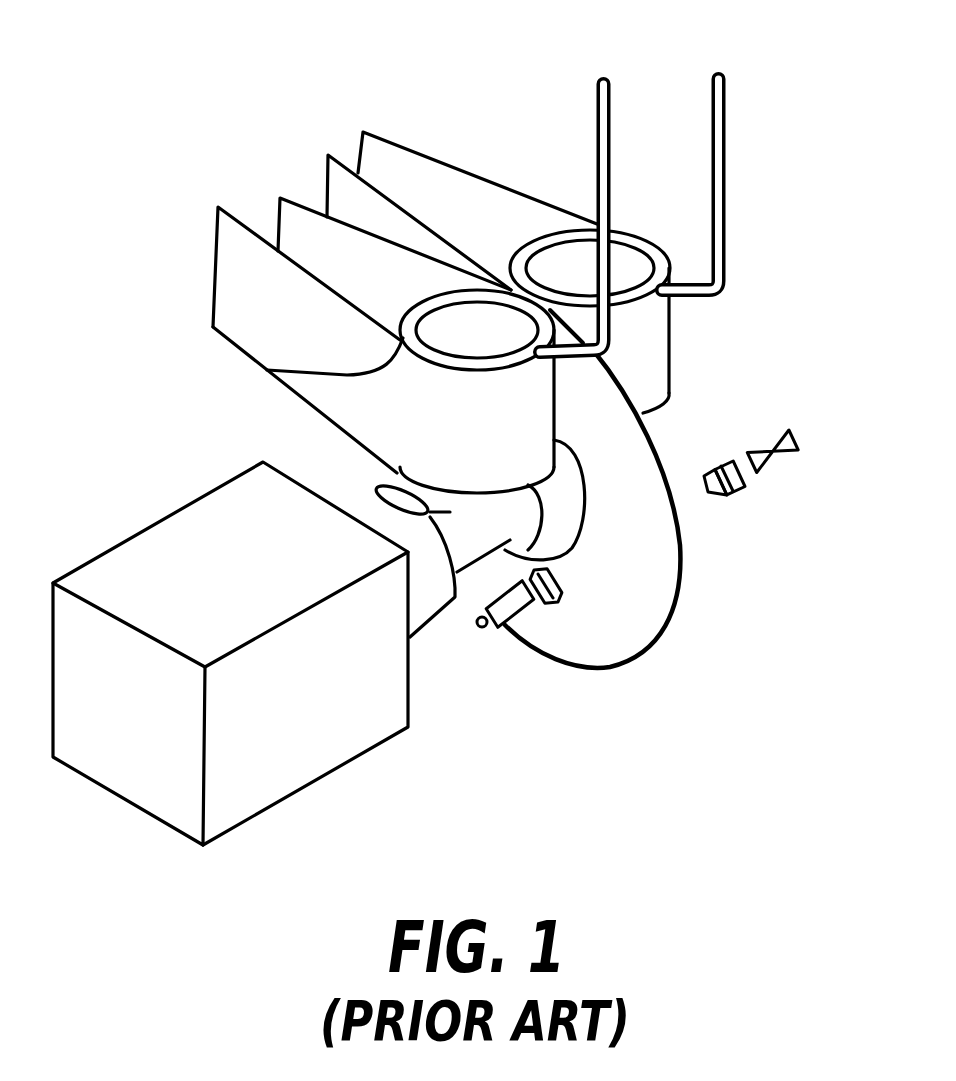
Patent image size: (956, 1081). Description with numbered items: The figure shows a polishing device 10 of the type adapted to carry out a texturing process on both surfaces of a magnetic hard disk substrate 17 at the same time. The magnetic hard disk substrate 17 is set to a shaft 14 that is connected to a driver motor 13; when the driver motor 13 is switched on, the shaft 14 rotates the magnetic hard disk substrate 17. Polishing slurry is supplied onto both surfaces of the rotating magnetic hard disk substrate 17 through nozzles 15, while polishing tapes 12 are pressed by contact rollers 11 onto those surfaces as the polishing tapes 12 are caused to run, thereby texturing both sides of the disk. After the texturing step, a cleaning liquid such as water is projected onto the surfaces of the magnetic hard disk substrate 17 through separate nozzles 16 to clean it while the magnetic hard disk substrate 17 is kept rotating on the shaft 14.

The polishing device 10 is at (136, 82).
The contact rollers 11 is at (300, 369).
The polishing tapes 12 is at (448, 184).
The driver motor 13 is at (203, 517).
The shaft 14 is at (373, 487).
The nozzles 15 is at (597, 111).
The nozzles 16 is at (517, 620).
The magnetic hard disk substrate 17 is at (657, 590).